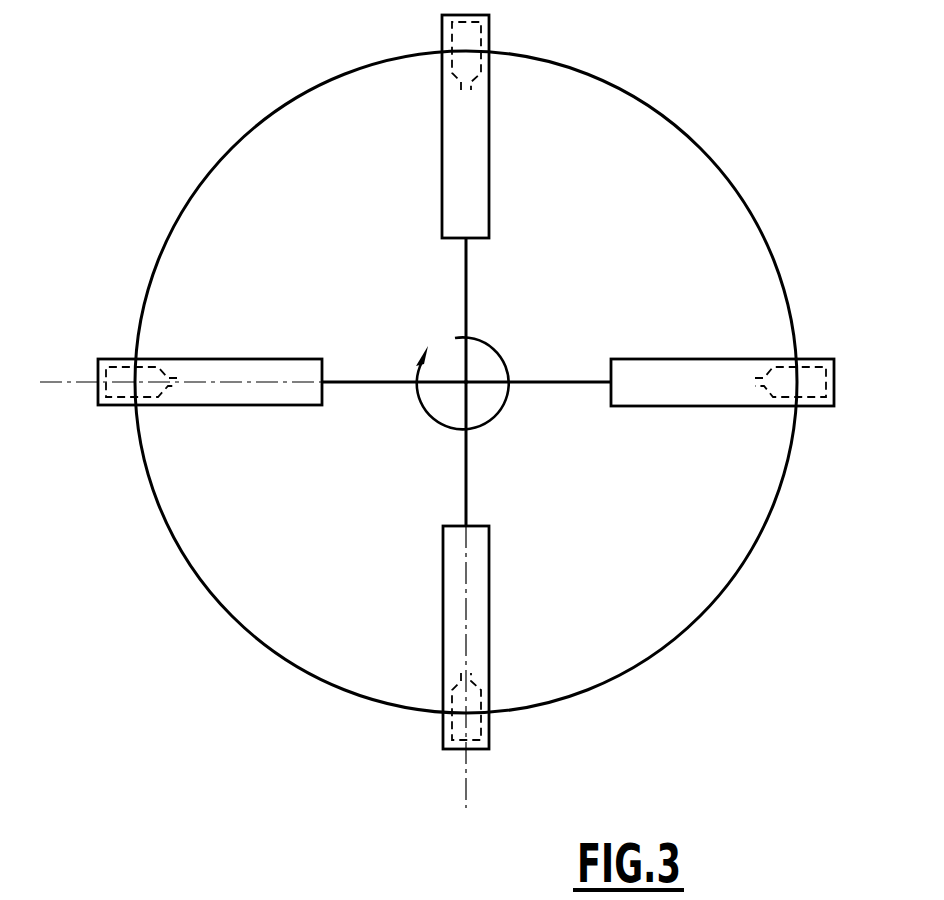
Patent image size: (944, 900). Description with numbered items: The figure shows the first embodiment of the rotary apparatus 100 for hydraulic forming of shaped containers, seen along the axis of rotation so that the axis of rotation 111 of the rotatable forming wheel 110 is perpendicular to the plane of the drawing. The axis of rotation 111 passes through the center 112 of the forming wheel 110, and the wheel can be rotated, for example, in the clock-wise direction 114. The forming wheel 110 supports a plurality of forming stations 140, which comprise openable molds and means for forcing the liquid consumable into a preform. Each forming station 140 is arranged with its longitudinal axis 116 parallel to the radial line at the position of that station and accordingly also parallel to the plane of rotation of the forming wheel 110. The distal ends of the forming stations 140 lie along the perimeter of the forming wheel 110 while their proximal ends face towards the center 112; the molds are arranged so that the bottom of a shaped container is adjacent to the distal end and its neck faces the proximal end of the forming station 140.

The rotary apparatus 100 is at (222, 92).
The rotatable forming wheel 110 is at (642, 192).
The axis of rotation 111 is at (472, 376).
The center 112 is at (466, 382).
The clock-wise direction 114 is at (504, 404).
The longitudinal axis 116 is at (466, 785).
The forming station 140 is at (489, 134).